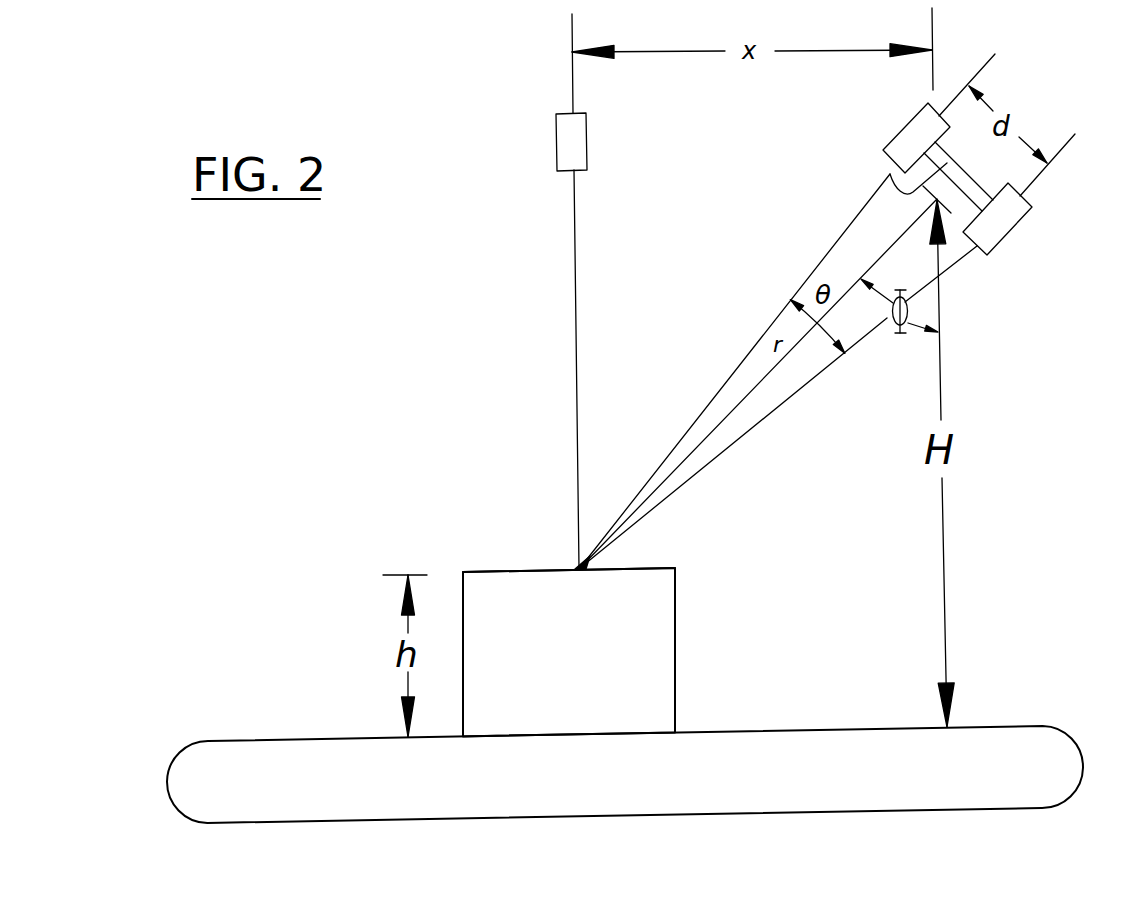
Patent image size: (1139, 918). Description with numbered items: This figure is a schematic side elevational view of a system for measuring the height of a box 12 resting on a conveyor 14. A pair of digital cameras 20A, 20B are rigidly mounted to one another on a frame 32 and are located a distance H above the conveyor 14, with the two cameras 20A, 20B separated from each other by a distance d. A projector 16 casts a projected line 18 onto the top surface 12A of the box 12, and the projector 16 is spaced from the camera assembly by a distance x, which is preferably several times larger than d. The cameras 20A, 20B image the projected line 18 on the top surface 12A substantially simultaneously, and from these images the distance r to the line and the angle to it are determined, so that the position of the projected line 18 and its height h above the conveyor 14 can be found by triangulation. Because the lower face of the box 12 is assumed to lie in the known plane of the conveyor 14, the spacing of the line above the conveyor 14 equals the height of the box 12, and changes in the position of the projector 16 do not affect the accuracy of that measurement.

The box 12 is at (658, 642).
The top surface 12A is at (643, 563).
The conveyor 14 is at (975, 727).
The projector 16 is at (587, 142).
The projected line 18 is at (572, 559).
The digital camera 20A is at (910, 138).
The digital camera 20B is at (997, 221).
The frame 32 is at (887, 176).